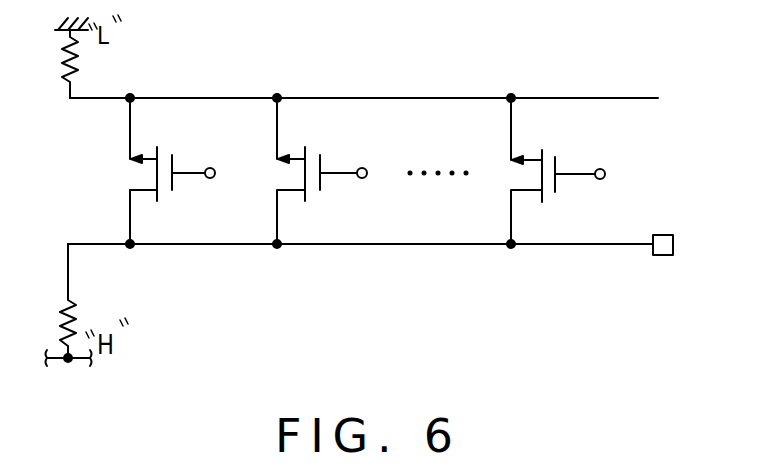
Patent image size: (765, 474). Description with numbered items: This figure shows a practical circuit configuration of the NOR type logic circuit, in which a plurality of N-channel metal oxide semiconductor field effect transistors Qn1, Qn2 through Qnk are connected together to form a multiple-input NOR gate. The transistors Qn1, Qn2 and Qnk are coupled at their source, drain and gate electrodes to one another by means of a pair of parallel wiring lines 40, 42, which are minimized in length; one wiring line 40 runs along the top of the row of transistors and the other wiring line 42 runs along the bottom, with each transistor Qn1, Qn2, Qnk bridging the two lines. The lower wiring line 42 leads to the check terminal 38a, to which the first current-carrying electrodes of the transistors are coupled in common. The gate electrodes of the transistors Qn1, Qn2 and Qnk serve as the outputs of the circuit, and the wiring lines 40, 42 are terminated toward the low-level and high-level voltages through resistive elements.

The parallel wiring line 40 is at (430, 98).
The parallel wiring line 42 is at (430, 246).
The check terminal 38a is at (663, 257).
The N-channel MOSFET Qn1 is at (184, 166).
The N-channel MOSFET Qn2 is at (334, 170).
The N-channel MOSFET Qnk is at (569, 171).